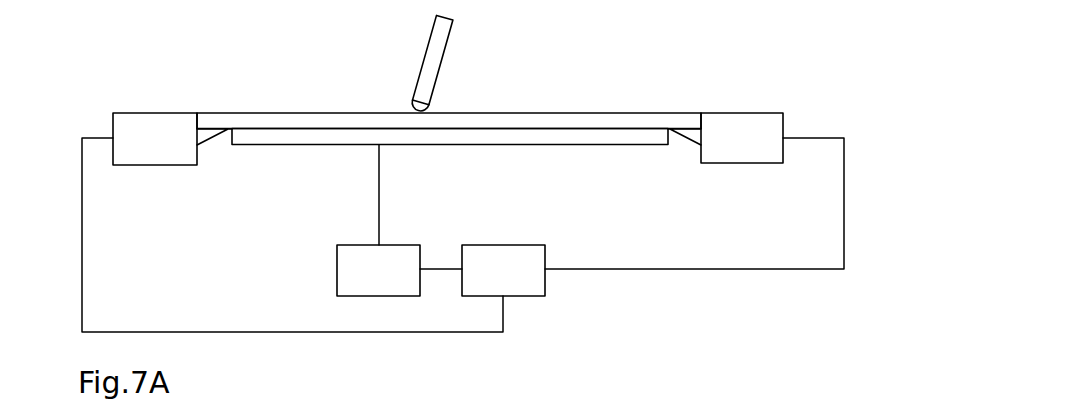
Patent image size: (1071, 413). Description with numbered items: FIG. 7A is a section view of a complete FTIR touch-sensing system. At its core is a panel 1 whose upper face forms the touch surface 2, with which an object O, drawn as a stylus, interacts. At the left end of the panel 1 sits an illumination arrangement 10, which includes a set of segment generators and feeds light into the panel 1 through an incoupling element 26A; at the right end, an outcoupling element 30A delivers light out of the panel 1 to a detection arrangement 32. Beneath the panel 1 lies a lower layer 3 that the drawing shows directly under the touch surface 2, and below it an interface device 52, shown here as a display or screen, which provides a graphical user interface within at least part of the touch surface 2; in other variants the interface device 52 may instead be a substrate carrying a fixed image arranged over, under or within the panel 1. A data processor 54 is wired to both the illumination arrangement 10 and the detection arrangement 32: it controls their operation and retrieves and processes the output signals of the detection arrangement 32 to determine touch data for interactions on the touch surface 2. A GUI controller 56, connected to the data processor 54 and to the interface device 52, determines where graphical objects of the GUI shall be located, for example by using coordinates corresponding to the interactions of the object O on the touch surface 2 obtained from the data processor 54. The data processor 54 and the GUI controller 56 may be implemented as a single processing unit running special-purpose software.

The panel 1 is at (449, 115).
The touch surface 2 is at (277, 112).
The lower electrode substrate 3 is at (300, 129).
The illumination arrangement 10 is at (167, 112).
The detection arrangement 32 is at (745, 112).
The incoupling element 26A is at (212, 137).
The outcoupling element 30A is at (687, 143).
The interface device 52 is at (455, 135).
The data processor 54 is at (488, 284).
The GUI controller 56 is at (363, 284).
The object O is at (440, 67).